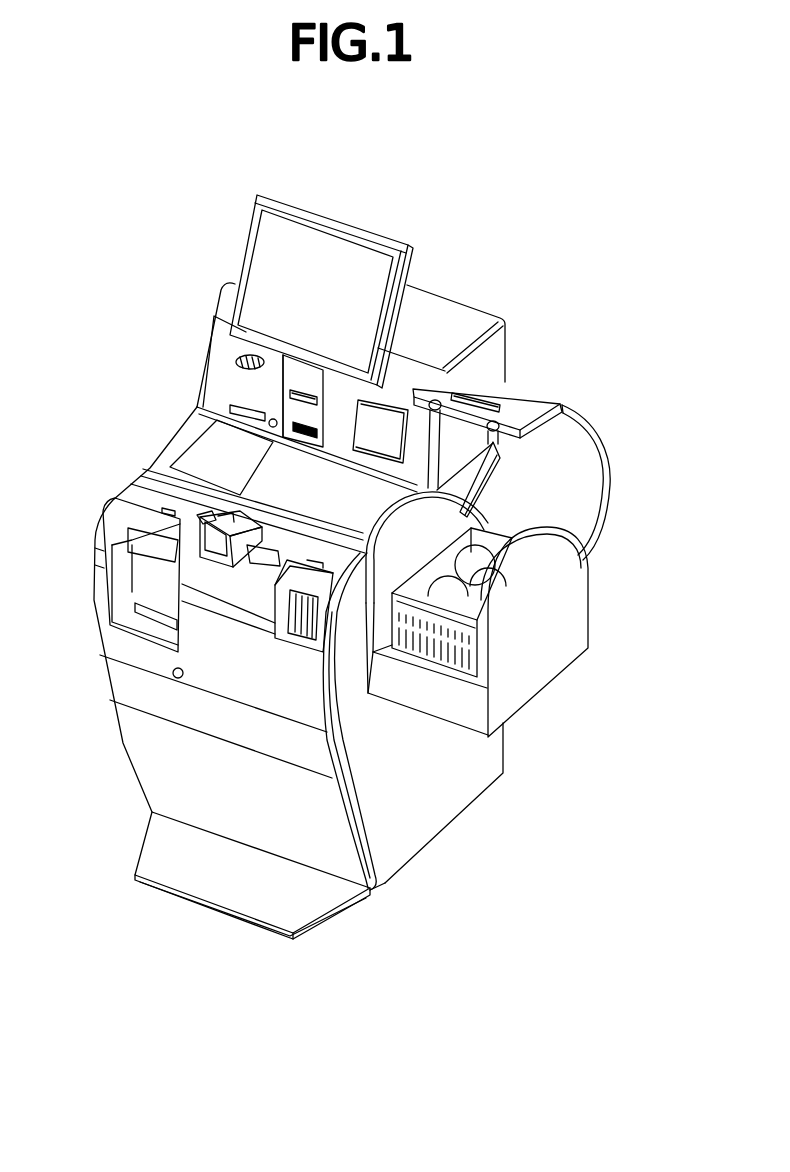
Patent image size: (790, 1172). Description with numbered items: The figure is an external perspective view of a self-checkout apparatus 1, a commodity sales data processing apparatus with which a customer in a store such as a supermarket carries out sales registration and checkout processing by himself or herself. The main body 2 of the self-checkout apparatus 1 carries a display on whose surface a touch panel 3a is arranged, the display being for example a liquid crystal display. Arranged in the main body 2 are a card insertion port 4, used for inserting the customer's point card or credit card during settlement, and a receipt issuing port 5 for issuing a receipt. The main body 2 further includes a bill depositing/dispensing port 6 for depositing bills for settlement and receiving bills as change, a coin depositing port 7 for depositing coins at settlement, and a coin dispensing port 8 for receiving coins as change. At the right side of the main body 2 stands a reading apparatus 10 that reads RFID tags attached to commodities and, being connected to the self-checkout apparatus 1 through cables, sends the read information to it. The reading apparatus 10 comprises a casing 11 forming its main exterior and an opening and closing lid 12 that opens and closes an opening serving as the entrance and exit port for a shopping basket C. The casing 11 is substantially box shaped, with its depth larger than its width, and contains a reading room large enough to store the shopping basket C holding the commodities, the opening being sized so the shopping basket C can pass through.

The self-checkout apparatus 1 is at (420, 158).
The main body 2 is at (402, 847).
The touch panel 3a is at (320, 257).
The card insertion port 4 is at (312, 386).
The receipt issuing port 5 is at (247, 363).
The bill depositing/dispensing port 6 is at (300, 612).
The coin depositing port 7 is at (223, 538).
The coin dispensing port 8 is at (153, 620).
The reading apparatus 10 is at (606, 340).
The casing 11 is at (548, 665).
The opening and closing lid 12 is at (505, 397).
The shopping basket C is at (465, 641).